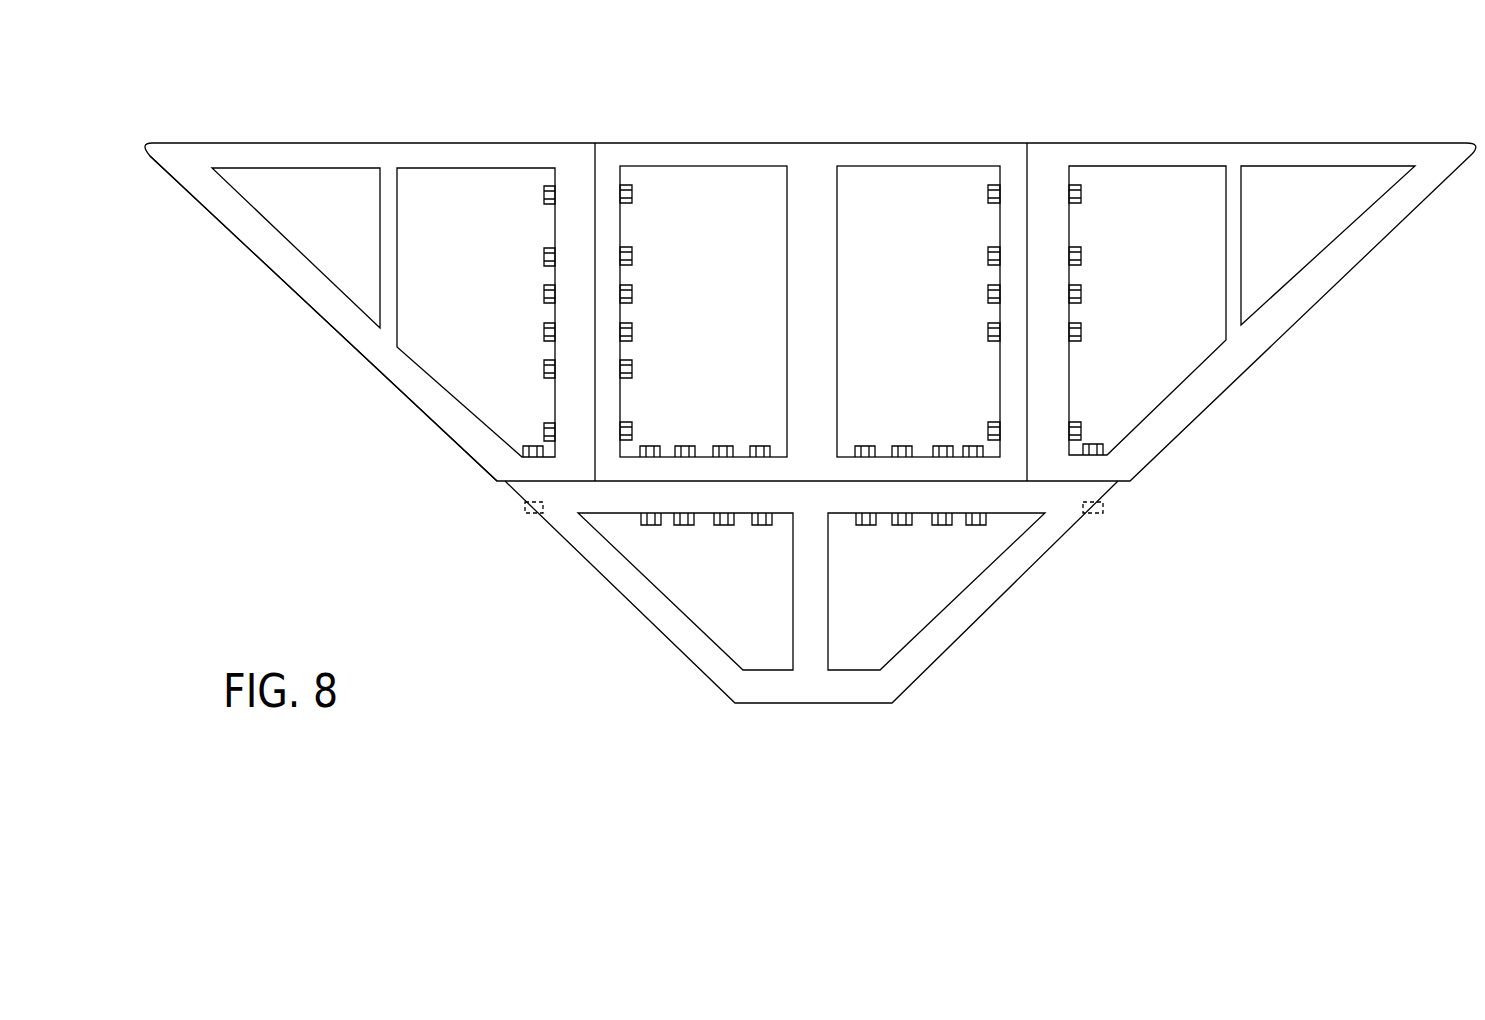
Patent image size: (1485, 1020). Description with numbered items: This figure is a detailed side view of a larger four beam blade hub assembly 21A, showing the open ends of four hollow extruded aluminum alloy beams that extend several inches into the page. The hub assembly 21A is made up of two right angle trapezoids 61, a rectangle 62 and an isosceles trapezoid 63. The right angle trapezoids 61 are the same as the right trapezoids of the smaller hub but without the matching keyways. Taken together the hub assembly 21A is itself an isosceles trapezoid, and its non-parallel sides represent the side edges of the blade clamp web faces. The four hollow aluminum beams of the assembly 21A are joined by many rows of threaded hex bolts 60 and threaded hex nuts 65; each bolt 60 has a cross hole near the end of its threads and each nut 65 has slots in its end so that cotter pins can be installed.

The blade hub assembly 21A is at (322, 541).
The threaded hex bolt 60 is at (525, 447).
The right angle trapezoid 61 is at (1103, 143).
The rectangle 62 is at (842, 143).
The isosceles trapezoid 63 is at (620, 598).
The threaded hex nut 65 is at (632, 430).